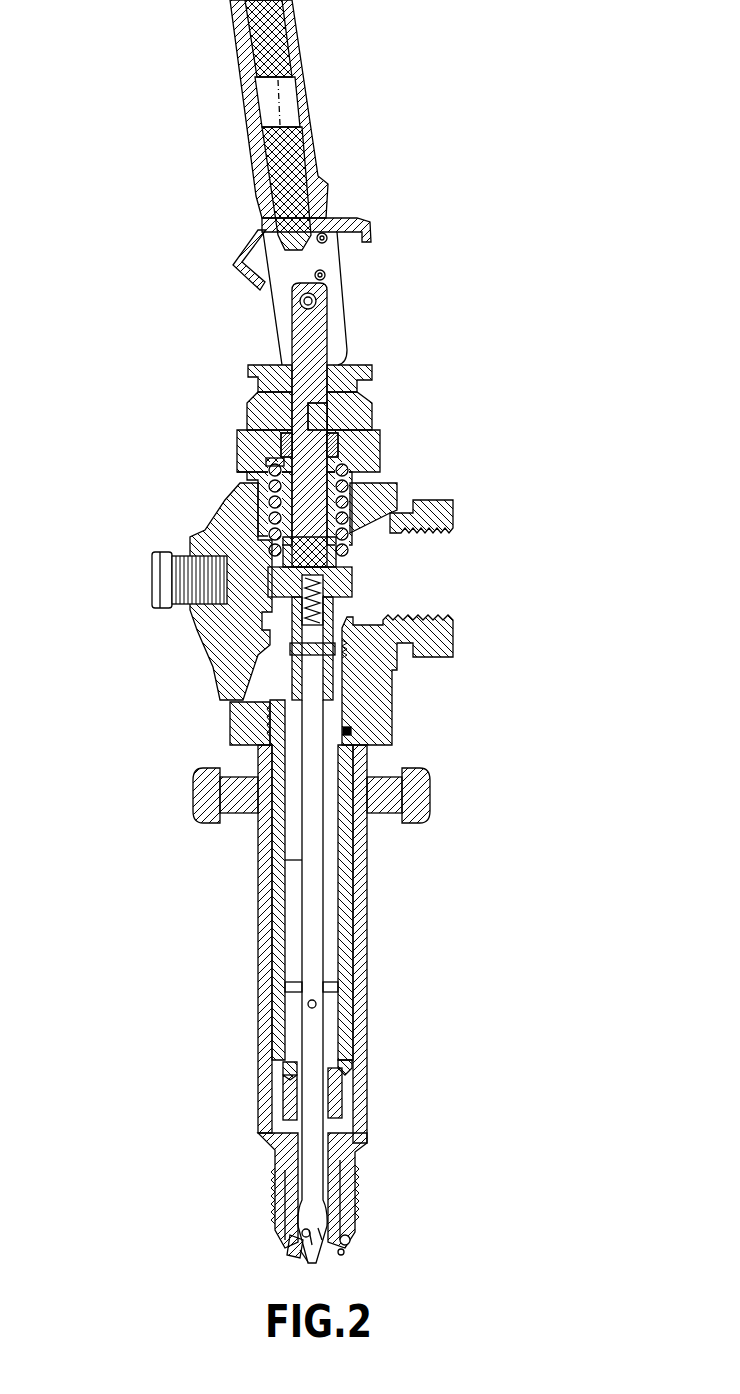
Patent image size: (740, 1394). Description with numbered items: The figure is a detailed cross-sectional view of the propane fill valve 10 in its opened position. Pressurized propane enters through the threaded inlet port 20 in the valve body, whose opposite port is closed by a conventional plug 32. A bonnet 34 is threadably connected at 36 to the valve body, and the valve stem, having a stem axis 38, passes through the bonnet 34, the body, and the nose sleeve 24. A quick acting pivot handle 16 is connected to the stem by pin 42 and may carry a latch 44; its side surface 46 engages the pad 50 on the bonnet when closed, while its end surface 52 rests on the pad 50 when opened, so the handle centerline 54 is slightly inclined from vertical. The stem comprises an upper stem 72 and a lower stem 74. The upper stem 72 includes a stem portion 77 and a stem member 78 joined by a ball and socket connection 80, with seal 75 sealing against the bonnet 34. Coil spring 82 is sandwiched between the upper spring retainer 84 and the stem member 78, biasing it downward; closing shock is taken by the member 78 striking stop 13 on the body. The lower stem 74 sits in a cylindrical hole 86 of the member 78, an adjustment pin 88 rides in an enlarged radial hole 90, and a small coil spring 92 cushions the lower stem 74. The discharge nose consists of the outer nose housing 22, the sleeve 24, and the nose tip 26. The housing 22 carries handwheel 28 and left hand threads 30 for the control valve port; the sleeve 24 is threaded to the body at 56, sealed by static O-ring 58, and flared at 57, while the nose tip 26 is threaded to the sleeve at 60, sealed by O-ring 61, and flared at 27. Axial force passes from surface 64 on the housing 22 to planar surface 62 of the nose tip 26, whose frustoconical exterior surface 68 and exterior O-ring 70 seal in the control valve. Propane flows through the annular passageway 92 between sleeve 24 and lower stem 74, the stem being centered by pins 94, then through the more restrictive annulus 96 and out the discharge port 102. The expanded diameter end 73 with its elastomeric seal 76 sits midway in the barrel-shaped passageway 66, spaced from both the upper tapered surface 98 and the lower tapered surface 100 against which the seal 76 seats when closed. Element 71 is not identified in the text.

The fill valve 10 is at (492, 629).
The stop 13 is at (273, 613).
The pivot handle 16 is at (313, 130).
The threaded inlet port 20 is at (440, 535).
The outer nose housing 22 is at (357, 893).
The nose sleeve 24 is at (347, 922).
The nose tip 26 is at (333, 1146).
The radially outward flared portion 27 is at (288, 1058).
The handwheel 28 is at (420, 815).
The threads 30 is at (357, 1180).
The plug 32 is at (163, 580).
The bonnet 34 is at (250, 439).
The threaded connection 36 is at (253, 508).
The stem axis 38 is at (308, 415).
The pin 42 is at (317, 302).
The latch 44 is at (365, 221).
The side surface 46 is at (347, 325).
The pad 50 is at (381, 365).
The end surface 52 is at (281, 380).
The centerline 54 is at (267, 43).
The threads 56 is at (347, 702).
The flared portion 57 is at (344, 674).
The static O-ring 58 is at (351, 732).
The threads 60 is at (290, 1092).
The static O-ring seal 61 is at (344, 1076).
The planar surface 62 is at (293, 1200).
The surface 64 is at (288, 1186).
The barrel-shaped flow passageway 66 is at (333, 1206).
The frustoconical exterior surface 68 is at (348, 1240).
The exterior O-ring 70 is at (343, 1250).
The retainer 71 is at (352, 502).
The upper stem 72 is at (313, 405).
The expanded diameter end 73 is at (314, 1231).
The lower stem 74 is at (312, 900).
The seal 75 is at (335, 443).
The elastomeric seal 76 is at (313, 1235).
The stem portion 77 is at (300, 337).
The stem member 78 is at (337, 583).
The ball and socket connection 80 is at (315, 556).
The coil spring 82 is at (341, 482).
The upper spring retainer 84 is at (228, 505).
The cylindrical hole 86 is at (303, 680).
The adjustment pin 88 is at (297, 648).
The enlarged radial hole 90 is at (293, 640).
The small coil spring / annular passageway 92 is at (319, 605).
The pins 94 is at (317, 1003).
The annulus 96 is at (330, 1096).
The upper tapered surface 98 is at (302, 1218).
The lower tapered surface 100 is at (306, 1236).
The discharge port 102 is at (307, 1260).